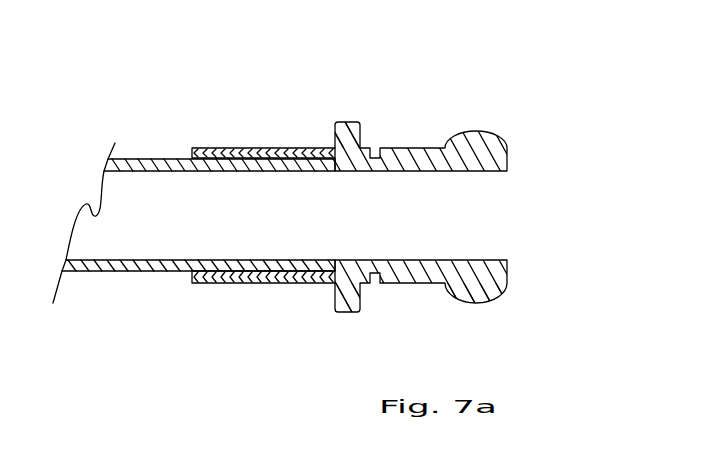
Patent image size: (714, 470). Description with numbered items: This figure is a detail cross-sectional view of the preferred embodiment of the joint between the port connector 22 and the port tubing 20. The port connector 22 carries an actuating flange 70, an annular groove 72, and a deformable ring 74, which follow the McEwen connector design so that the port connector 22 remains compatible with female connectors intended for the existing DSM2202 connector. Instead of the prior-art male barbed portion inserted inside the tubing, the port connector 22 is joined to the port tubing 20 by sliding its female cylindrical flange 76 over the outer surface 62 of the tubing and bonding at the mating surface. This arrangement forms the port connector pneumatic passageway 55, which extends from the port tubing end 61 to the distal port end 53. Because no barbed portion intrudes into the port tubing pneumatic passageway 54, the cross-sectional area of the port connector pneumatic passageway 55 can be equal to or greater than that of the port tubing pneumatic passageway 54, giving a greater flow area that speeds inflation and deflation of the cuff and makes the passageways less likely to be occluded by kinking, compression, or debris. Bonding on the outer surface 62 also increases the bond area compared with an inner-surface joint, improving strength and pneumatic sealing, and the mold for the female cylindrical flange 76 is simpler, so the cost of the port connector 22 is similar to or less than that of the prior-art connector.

The port tubing 20 is at (173, 271).
The port connector 22 is at (202, 52).
The distal port end 53 is at (507, 156).
The port tubing pneumatic passageway 54 is at (138, 209).
The port connector pneumatic passageway 55 is at (487, 222).
The port tubing end 61 is at (336, 168).
The outer surface 62 is at (93, 272).
The actuating flange 70 is at (347, 121).
The annular groove 72 is at (373, 285).
The deformable ring 74 is at (470, 303).
The female cylindrical flange 76 is at (230, 284).